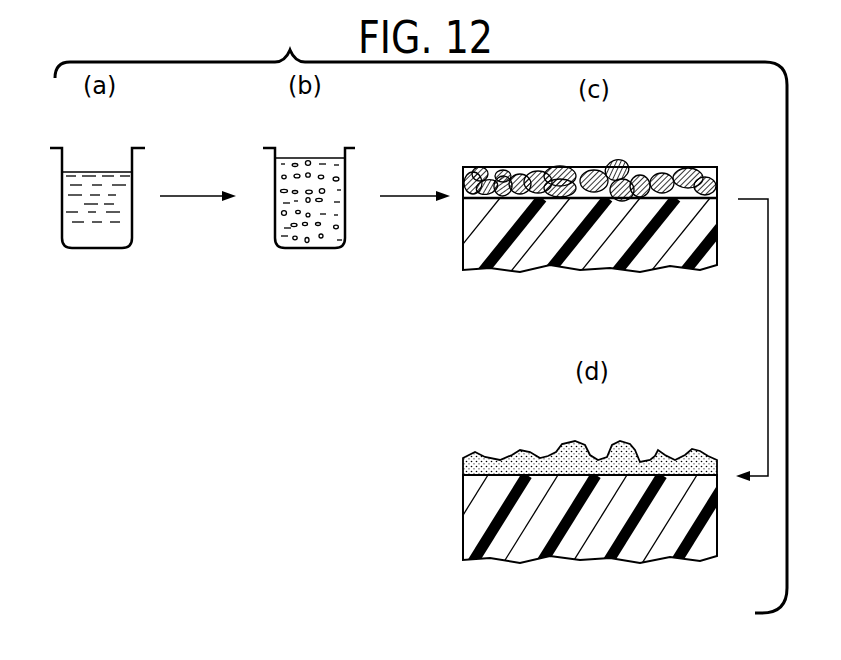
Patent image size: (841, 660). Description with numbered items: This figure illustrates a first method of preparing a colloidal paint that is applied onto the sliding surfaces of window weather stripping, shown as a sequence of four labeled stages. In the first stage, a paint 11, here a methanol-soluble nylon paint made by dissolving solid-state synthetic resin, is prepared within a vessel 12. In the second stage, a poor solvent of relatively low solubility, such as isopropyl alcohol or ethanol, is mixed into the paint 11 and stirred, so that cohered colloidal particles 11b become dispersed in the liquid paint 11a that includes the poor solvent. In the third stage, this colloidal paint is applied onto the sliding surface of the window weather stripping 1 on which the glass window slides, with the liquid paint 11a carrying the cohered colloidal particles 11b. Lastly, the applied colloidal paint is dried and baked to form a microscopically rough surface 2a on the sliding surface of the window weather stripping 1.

The window weather stripping 1 is at (694, 518).
The microscopically rough surface 2a is at (628, 446).
The paint 11 is at (103, 172).
The liquid paint 11a is at (318, 158).
The colloidal particles 11b is at (335, 186).
The vessel 12 is at (62, 182).